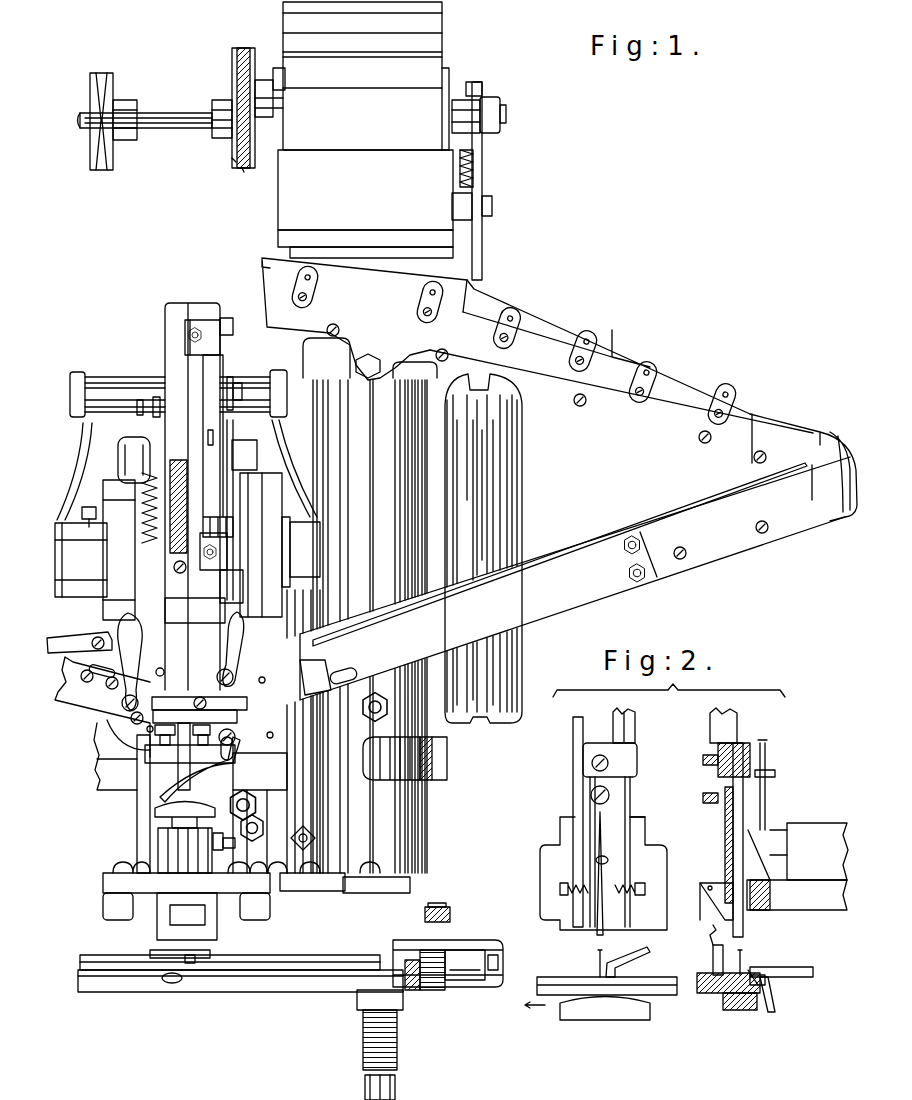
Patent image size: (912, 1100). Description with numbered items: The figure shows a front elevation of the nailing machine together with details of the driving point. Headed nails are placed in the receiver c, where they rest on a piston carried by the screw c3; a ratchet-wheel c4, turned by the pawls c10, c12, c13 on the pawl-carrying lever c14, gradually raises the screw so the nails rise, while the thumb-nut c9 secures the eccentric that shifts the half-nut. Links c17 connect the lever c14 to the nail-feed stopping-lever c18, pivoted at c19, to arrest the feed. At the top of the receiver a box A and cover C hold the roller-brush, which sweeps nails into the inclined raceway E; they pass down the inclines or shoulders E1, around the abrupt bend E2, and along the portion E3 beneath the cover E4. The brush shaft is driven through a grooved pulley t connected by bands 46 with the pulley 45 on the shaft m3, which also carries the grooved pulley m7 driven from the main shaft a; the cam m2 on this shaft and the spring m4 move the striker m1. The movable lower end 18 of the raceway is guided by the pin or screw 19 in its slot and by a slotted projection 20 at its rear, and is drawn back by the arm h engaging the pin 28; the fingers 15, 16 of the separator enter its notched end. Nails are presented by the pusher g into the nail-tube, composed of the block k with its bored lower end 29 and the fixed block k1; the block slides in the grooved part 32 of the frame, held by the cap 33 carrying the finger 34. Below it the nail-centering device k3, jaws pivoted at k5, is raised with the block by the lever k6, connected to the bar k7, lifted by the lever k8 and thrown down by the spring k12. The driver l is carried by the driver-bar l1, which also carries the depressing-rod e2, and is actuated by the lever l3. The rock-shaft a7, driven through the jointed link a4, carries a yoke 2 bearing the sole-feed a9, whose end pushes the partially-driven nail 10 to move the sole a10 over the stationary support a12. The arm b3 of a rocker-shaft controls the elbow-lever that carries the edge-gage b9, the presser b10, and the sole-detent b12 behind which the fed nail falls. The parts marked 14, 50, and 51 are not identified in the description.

In FIG. 1, the cover C is at (366, 76).
In FIG. 1, the box A is at (365, 204).
In FIG. 1, the striker m1 is at (478, 181).
In FIG. 1, the cam m2 is at (480, 90).
In FIG. 1, the shaft m3 is at (512, 118).
In FIG. 1, the spring m4 is at (475, 168).
In FIG. 1, the grooved pulley t is at (232, 74).
In FIG. 1, the pulley 45 is at (232, 160).
In FIG. 1, the bands 46 is at (243, 168).
In FIG. 1, the grooved pulley m7 is at (113, 133).
In FIG. 1, the inclined raceway E is at (364, 319).
In FIG. 1, the inclines or shoulders E1 is at (621, 371).
In FIG. 1, the abrupt bend or curve E2 is at (846, 446).
In FIG. 1, the raceway portion E3 is at (575, 578).
In FIG. 1, the cover E4 is at (587, 543).
In FIG. 1, the slotted projection 20 is at (358, 668).
In FIG. 1, the receiver c is at (457, 772).
In FIG. 1, the jointed link a4 is at (491, 548).
In FIG. 1, the rock-shaft a7 is at (318, 780).
In FIG. 1, the driver-bar l1 is at (192, 496).
In FIG. 2, the driver-bar l1 is at (636, 740).
In FIG. 1, the driver lever l3 is at (223, 366).
In FIG. 1, the lever k6 is at (130, 441).
In FIG. 1, the lever k8 is at (87, 506).
In FIG. 1, the spring k12 is at (143, 522).
In FIG. 1, the bar k7 is at (172, 560).
In FIG. 2, the bar k7 is at (595, 822).
In FIG. 1, the main shaft a is at (73, 560).
In FIG. 1, the yielding depressing-rod e2 is at (190, 614).
In FIG. 2, the yielding depressing-rod e2 is at (752, 793).
In FIG. 1, the arm h is at (175, 661).
In FIG. 1, the pivot k5 is at (155, 659).
In FIG. 2, the pivot k5 is at (590, 795).
In FIG. 1, the driver l is at (187, 706).
In FIG. 2, the driver l is at (598, 932).
In FIG. 1, the yoke 2 is at (262, 702).
In FIG. 1, the movable lower end of raceway 18 is at (128, 702).
In FIG. 1, the pin 28 is at (131, 718).
In FIG. 1, the guiding pin or screw 19 is at (147, 730).
In FIG. 1, the cap 33 is at (195, 716).
In FIG. 1, the finger 34 is at (199, 703).
In FIG. 1, the nail-centering device k3 is at (180, 762).
In FIG. 2, the nail-centering device k3 is at (596, 860).
In FIG. 1, the sole-feed a9 is at (200, 765).
In FIG. 2, the sole-feed a9 is at (713, 963).
In FIG. 1, the stationary support a12 is at (195, 837).
In FIG. 2, the stationary support a12 is at (658, 1012).
In FIG. 1, the rocker-shaft arm b3 is at (190, 930).
In FIG. 1, the links c17 is at (152, 956).
In FIG. 1, the nail-feed stopping-lever c18 is at (174, 985).
In FIG. 1, the pivot c19 is at (192, 965).
In FIG. 1, the thumb-nut c9 is at (447, 912).
In FIG. 1, the pawl c13 is at (484, 948).
In FIG. 1, the pawl-carrying lever c14 is at (499, 962).
In FIG. 1, the ratchet-wheel c4 is at (411, 992).
In FIG. 1, the pawl c10 is at (430, 962).
In FIG. 1, the pawl c12 is at (460, 958).
In FIG. 1, the screw c3 is at (437, 755).
In FIG. 2, the block of nail-tube k is at (583, 843).
In FIG. 2, the grooved part of frame-work 32 is at (640, 836).
In FIG. 2, the plate 14 is at (530, 938).
In FIG. 2, the nail 10 is at (676, 956).
In FIG. 2, the sole or stock a10 is at (642, 987).
In FIG. 2, the fixed block k1 is at (758, 832).
In FIG. 2, the pusher g is at (820, 832).
In FIG. 2, the finger 15 is at (778, 838).
In FIG. 2, the finger 16 is at (780, 864).
In FIG. 2, the lower end of block 29 is at (712, 893).
In FIG. 2, the gear 50 is at (762, 906).
In FIG. 2, the pin 51 is at (750, 972).
In FIG. 2, the sole-detent b12 is at (768, 968).
In FIG. 2, the presser b10 is at (813, 972).
In FIG. 2, the adjustable edge-gage b9 is at (775, 1003).